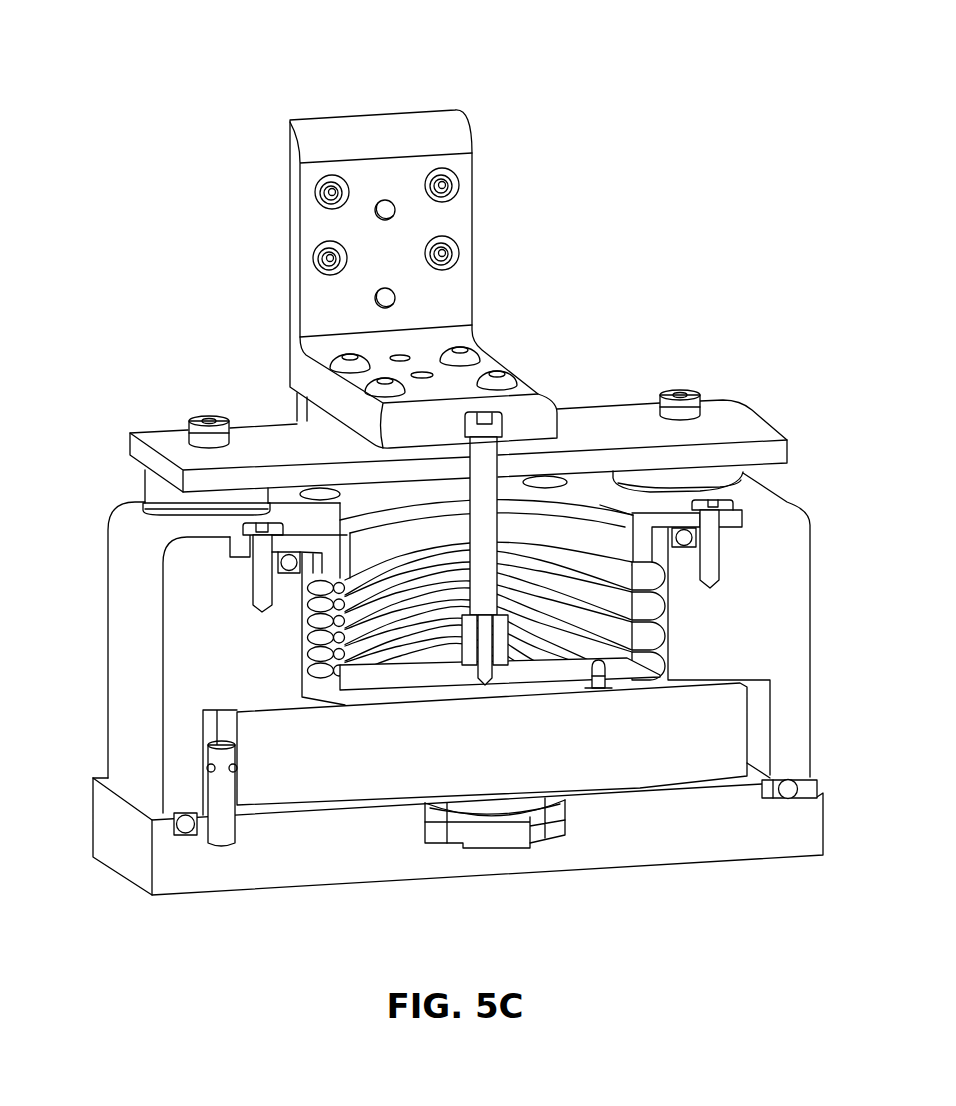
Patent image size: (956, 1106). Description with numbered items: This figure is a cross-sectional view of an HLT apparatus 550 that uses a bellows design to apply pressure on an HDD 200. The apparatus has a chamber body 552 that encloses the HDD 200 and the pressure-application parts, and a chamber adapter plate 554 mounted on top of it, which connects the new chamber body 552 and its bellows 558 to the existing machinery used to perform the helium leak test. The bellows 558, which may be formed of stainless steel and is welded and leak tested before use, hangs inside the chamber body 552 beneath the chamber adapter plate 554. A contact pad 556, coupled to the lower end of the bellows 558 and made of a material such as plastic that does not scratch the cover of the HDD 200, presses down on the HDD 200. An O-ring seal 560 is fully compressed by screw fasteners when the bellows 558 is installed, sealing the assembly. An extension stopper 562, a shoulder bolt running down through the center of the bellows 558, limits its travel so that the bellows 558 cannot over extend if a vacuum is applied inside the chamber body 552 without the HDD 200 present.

The HLT apparatus 550 is at (582, 108).
The chamber body 552 is at (176, 657).
The chamber adapter plate 554 is at (627, 417).
The contact pad 556 is at (543, 690).
The bellows 558 is at (368, 562).
The O-ring seal 560 is at (690, 555).
The extension stopper 562 is at (485, 578).
The HDD 200 is at (617, 762).